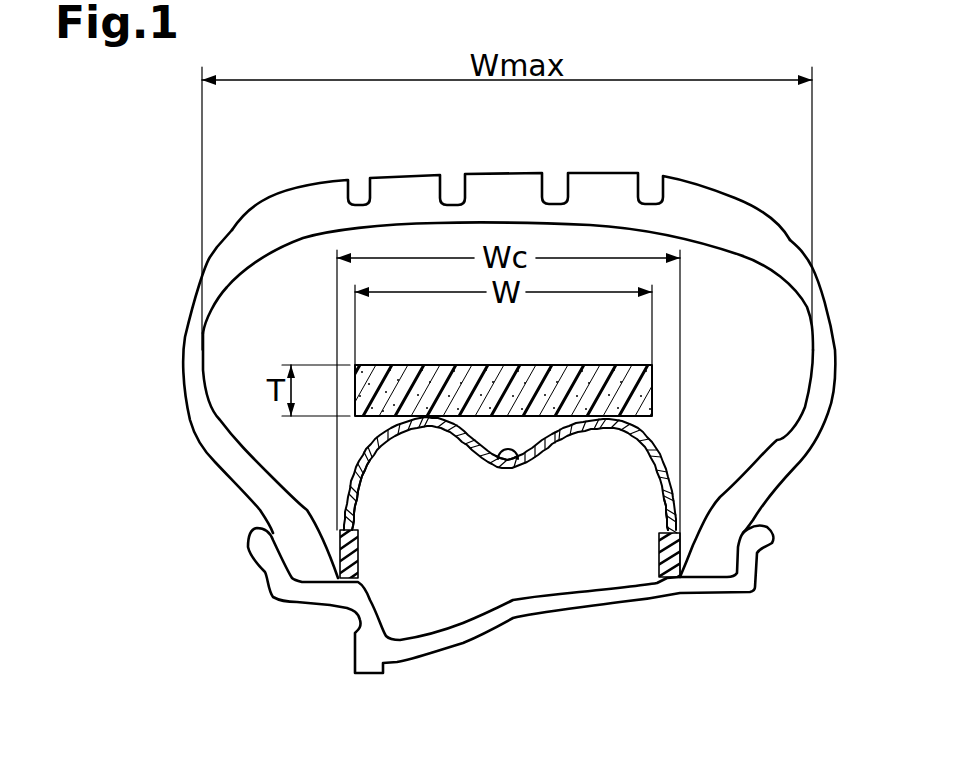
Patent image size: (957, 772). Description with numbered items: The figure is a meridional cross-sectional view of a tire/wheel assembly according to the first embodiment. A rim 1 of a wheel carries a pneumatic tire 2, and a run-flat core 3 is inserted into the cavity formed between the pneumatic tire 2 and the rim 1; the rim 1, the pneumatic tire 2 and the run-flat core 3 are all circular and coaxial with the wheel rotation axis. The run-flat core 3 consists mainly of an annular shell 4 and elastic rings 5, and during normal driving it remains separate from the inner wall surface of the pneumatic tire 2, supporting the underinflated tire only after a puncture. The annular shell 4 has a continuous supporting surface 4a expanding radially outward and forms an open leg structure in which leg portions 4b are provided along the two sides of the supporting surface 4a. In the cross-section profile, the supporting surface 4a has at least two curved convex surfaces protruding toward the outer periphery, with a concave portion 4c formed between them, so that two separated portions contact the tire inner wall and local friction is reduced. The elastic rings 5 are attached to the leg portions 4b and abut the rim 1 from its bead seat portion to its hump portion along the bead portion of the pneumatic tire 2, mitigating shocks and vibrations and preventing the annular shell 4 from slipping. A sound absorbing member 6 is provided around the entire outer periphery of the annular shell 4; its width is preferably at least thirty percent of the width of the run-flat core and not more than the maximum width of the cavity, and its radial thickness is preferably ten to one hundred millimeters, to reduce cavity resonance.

The rim 1 is at (600, 600).
The pneumatic tire 2 is at (725, 207).
The run-flat core 3 is at (681, 433).
The annular shell 4 is at (610, 438).
The supporting surface 4a is at (428, 416).
The leg portions 4b is at (364, 497).
The concave portion 4c is at (500, 462).
The elastic rings 5 is at (359, 550).
The sound absorbing member 6 is at (682, 368).